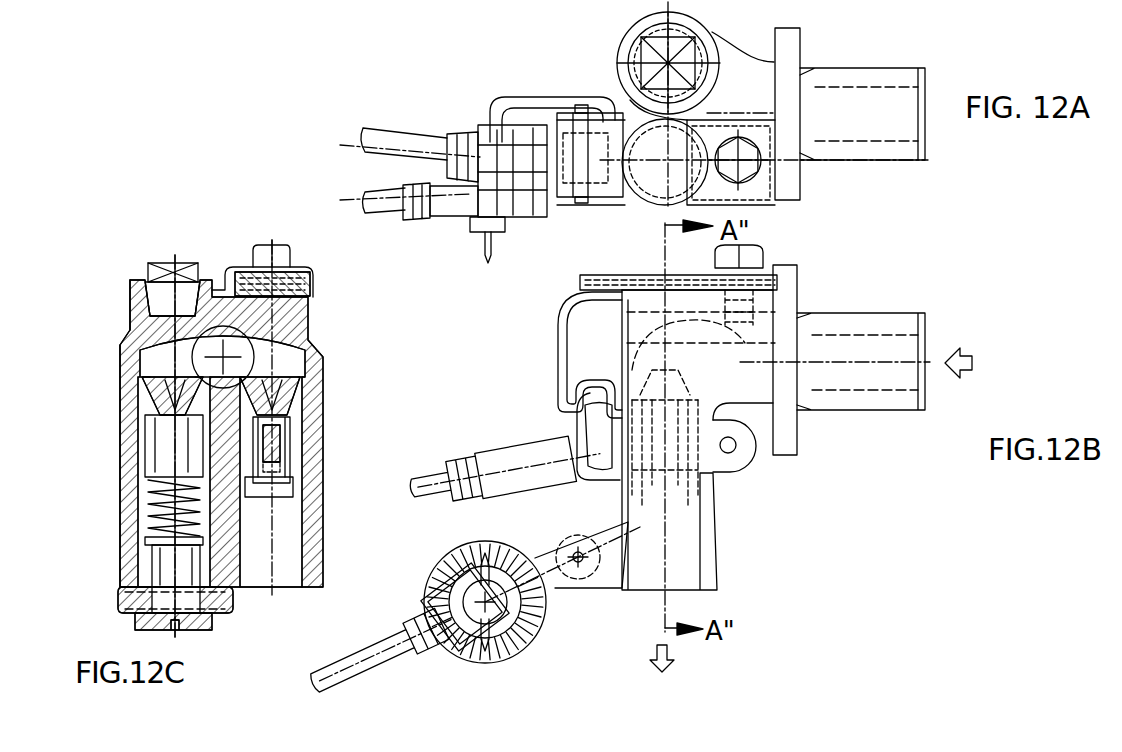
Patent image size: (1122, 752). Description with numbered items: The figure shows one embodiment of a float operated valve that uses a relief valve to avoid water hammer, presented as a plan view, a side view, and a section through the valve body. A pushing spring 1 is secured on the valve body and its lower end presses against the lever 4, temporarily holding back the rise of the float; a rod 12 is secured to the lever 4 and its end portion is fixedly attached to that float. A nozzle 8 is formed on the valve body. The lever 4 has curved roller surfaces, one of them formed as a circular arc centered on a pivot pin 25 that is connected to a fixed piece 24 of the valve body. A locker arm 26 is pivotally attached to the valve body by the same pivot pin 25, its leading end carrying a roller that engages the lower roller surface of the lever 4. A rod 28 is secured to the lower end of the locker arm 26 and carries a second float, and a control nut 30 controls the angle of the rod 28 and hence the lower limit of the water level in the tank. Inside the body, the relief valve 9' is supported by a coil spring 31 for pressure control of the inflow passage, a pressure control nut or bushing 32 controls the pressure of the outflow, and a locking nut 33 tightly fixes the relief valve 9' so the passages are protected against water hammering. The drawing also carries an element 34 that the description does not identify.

In FIG. 12B, the pushing spring 1 is at (556, 333).
In FIG. 12C, the lever 4 is at (273, 450).
In FIG. 12C, the nozzle 8 is at (170, 370).
In FIG. 12C, the relief valve 9' is at (223, 390).
In FIG. 12B, the rod 12 is at (435, 478).
In FIG. 12C, the fixed piece 24 is at (118, 463).
In FIG. 12A, the pivot pin 25 is at (573, 204).
In FIG. 12B, the pivot pin 25 is at (578, 565).
In FIG. 12B, the locker arm 26 is at (628, 527).
In FIG. 12B, the rod 28 is at (364, 657).
In FIG. 12A, the control nut 30 is at (462, 212).
In FIG. 12B, the control nut 30 is at (445, 560).
In FIG. 12C, the coil spring 31 is at (170, 472).
In FIG. 12C, the pressure control nut 32 is at (135, 628).
In FIG. 12C, the locking nut 33 is at (118, 590).
In FIG. 12A, the plug 34 is at (630, 49).
In FIG. 12B, the plug 34 is at (657, 268).
In FIG. 12C, the plug 34 is at (165, 255).